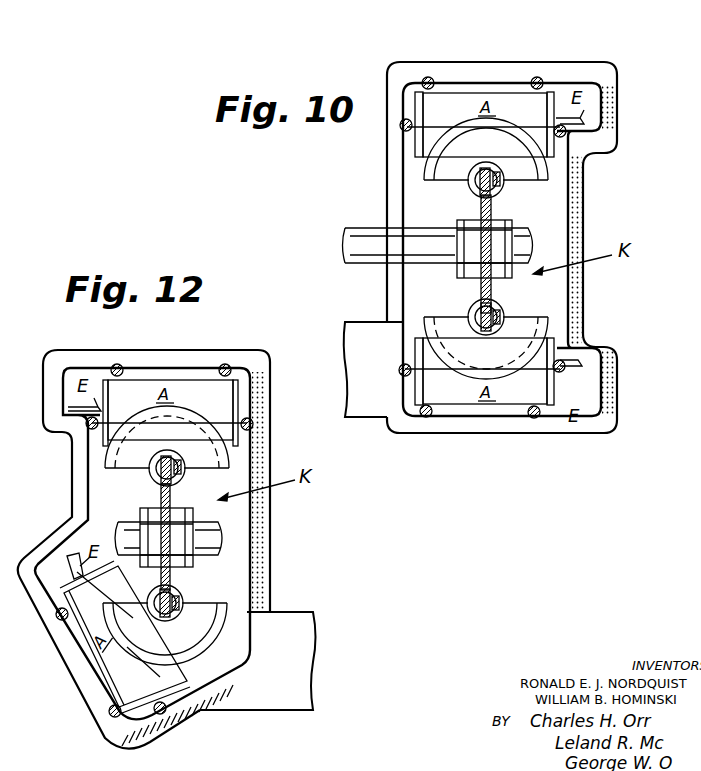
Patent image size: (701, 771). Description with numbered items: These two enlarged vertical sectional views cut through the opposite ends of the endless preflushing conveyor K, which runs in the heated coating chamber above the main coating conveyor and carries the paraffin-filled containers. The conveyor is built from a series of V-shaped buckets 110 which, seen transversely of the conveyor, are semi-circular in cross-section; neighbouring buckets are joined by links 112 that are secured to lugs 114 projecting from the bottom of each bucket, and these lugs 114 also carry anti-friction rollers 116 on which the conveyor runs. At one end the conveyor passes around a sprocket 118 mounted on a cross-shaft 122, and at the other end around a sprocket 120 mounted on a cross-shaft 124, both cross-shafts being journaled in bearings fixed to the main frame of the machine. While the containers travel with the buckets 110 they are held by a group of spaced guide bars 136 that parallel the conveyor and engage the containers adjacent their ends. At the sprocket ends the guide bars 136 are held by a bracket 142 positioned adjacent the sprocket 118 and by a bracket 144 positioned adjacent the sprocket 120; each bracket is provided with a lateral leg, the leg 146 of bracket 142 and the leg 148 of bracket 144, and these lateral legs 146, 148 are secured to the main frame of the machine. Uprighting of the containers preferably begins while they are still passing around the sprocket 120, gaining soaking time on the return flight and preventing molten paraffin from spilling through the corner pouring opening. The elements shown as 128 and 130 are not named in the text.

In FIG. 10, the bucket 110 is at (535, 172).
In FIG. 12, the bucket 110 is at (210, 456).
In FIG. 10, the link 112 is at (493, 188).
In FIG. 10, the lug 114 is at (501, 176).
In FIG. 12, the lug 114 is at (180, 462).
In FIG. 10, the anti-friction roller 116 is at (488, 166).
In FIG. 12, the anti-friction roller 116 is at (167, 455).
In FIG. 10, the sprocket 118 is at (458, 268).
In FIG. 12, the sprocket 120 is at (146, 516).
In FIG. 10, the cross-shaft 122 is at (370, 258).
In FIG. 12, the cross-shaft 124 is at (195, 547).
In FIG. 10, the bearing ring 128 is at (478, 172).
In FIG. 12, the bearing ring 128 is at (152, 466).
In FIG. 10, the armature shaft 130 is at (481, 213).
In FIG. 12, the armature shaft 130 is at (175, 505).
In FIG. 10, the guide bar 136 is at (431, 78).
In FIG. 12, the guide bar 136 is at (115, 364).
In FIG. 10, the bracket 142 is at (607, 120).
In FIG. 12, the bracket 144 is at (262, 518).
In FIG. 10, the lateral leg 146 is at (358, 338).
In FIG. 12, the lateral leg 148 is at (295, 636).